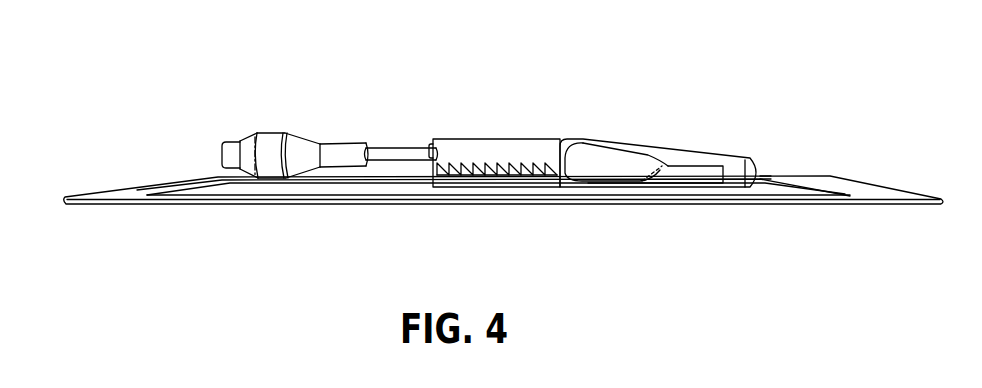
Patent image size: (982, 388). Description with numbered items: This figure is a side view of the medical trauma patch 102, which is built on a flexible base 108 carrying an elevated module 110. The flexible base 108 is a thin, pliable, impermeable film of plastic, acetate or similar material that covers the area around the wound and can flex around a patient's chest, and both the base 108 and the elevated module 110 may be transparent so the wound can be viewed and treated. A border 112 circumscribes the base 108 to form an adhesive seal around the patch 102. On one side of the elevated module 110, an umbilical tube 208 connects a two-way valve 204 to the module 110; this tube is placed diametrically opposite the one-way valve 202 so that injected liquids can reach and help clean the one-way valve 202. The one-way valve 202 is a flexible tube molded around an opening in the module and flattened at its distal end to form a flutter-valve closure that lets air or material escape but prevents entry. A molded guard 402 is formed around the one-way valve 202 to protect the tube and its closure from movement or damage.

The medical trauma patch 102 is at (129, 76).
The flexible base 108 is at (275, 197).
The border 112 is at (503, 220).
The two-way valve 204 is at (292, 152).
The umbilical tube 208 is at (411, 153).
The elevated module 110 is at (513, 150).
The one-way valve 202 is at (613, 158).
The molded guard 402 is at (688, 158).